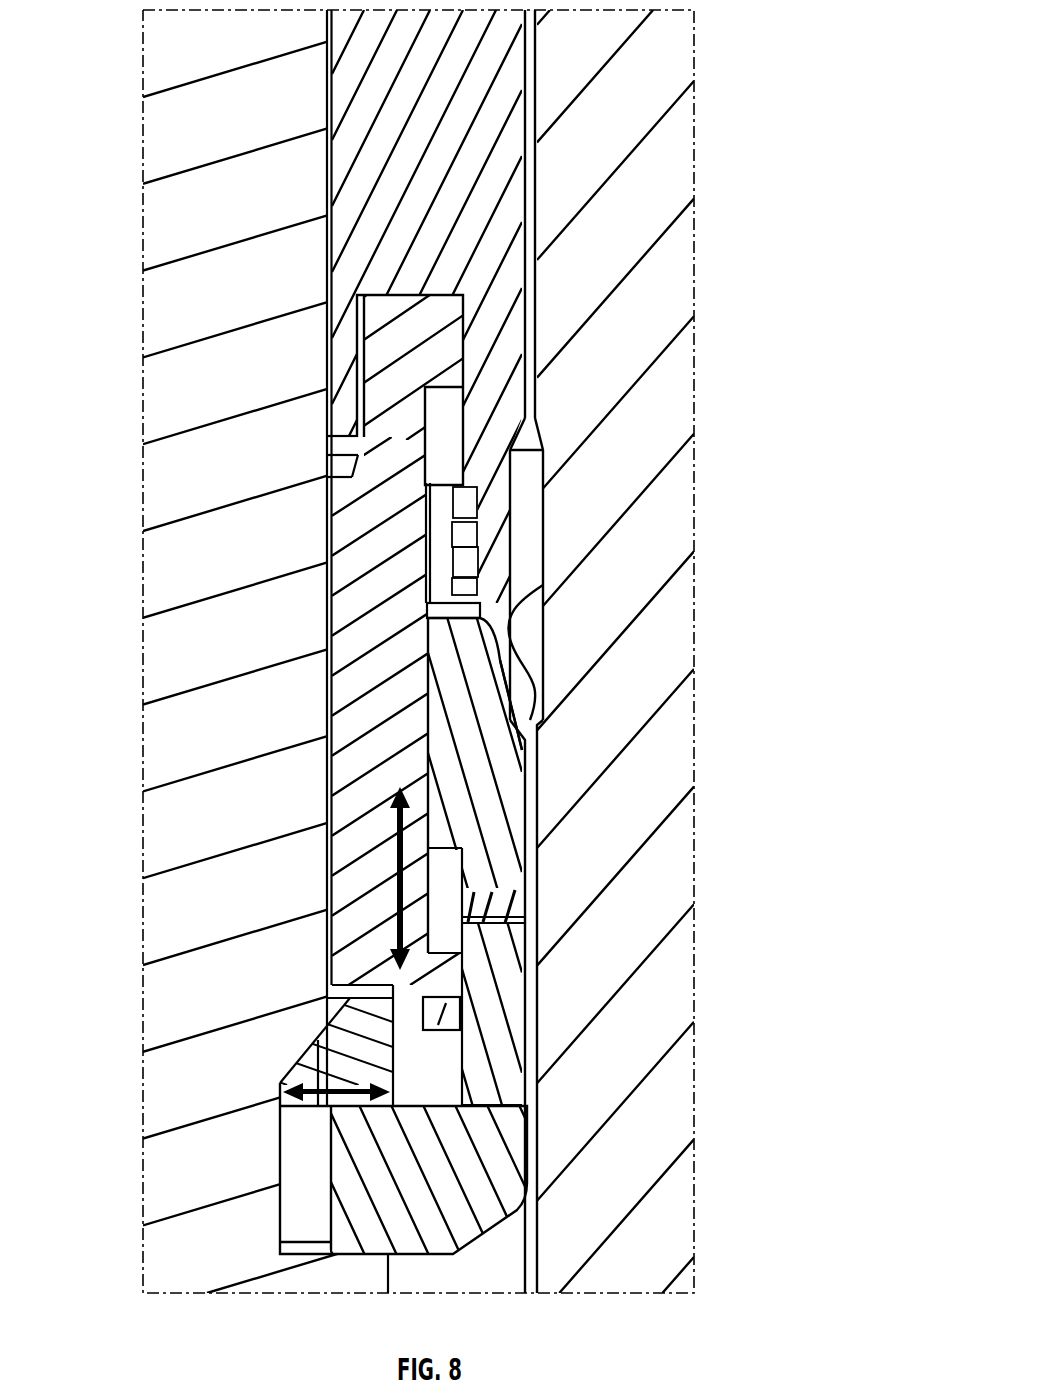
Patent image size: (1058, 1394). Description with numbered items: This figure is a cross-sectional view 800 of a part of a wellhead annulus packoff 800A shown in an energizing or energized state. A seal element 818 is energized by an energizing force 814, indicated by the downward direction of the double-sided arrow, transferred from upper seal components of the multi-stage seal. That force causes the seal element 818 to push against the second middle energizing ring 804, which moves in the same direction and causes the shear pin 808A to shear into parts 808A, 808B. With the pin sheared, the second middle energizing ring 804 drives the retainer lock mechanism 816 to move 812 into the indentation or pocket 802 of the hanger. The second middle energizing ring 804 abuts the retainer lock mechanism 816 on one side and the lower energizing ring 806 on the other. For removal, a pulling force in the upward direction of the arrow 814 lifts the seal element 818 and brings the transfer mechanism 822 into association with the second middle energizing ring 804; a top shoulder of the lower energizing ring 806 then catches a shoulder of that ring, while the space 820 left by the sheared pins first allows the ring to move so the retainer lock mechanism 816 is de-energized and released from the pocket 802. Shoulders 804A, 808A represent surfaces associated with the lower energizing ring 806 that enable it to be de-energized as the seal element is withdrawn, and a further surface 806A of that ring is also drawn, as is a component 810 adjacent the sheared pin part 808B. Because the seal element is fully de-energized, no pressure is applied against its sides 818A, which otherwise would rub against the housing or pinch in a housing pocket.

The cross-sectional view 800 is at (706, 42).
The wellhead annulus packoff 800A is at (535, 154).
The indentation or pocket of the hanger 802 is at (285, 1172).
The second middle energizing ring 804 is at (370, 752).
The shoulder 804A is at (425, 950).
The lower energizing ring 806 is at (456, 814).
The biasing member end 806A is at (440, 855).
The shear pin 808A is at (462, 890).
The sheared part of the shear pin 808B is at (432, 1012).
The retainer 810 is at (407, 1062).
The movement of the retainer lock mechanism 812 is at (318, 1078).
The energizing force 814 is at (455, 920).
The retainer lock mechanism 816 is at (347, 1028).
The seal element 818 is at (497, 365).
The side of the seal element 818A is at (540, 632).
The space 820 is at (462, 924).
The transfer mechanism 822 is at (458, 550).